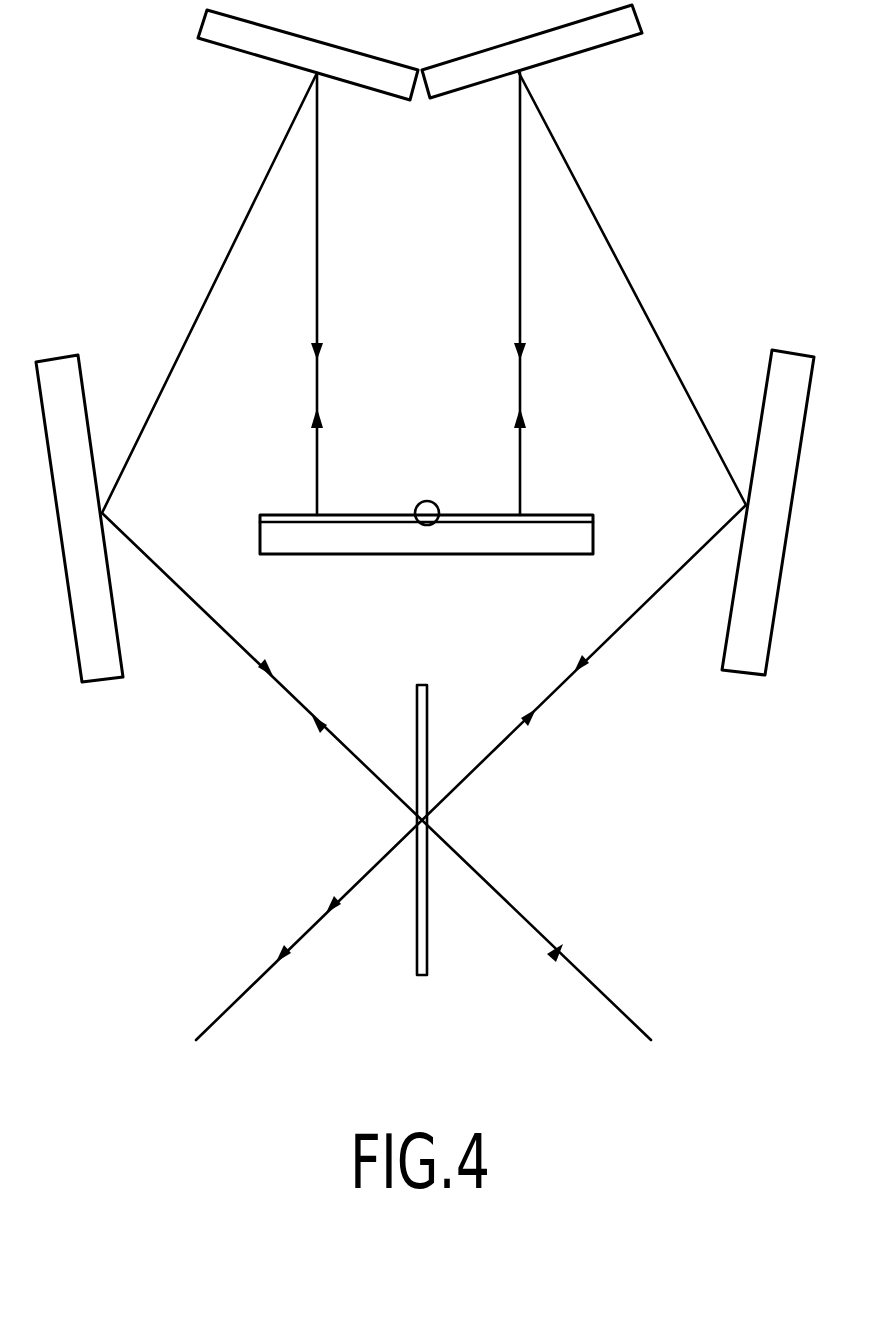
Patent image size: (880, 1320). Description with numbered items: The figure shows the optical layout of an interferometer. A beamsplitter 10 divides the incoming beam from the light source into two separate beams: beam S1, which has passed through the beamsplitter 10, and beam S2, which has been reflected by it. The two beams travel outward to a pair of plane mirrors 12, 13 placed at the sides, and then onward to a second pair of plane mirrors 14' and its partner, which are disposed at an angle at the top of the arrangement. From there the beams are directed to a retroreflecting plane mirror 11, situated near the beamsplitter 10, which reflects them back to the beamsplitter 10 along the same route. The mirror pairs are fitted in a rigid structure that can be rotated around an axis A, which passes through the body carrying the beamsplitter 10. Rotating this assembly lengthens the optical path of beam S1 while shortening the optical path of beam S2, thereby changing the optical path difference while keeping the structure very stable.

The plane mirror 14' is at (281, 80).
The plane mirror 12 is at (85, 390).
The plane mirror 13 is at (765, 383).
The plane mirror 11 is at (260, 515).
The axis A is at (437, 520).
The beamsplitter 10 is at (428, 920).
The beam S1 is at (360, 760).
The beam S2 is at (490, 753).